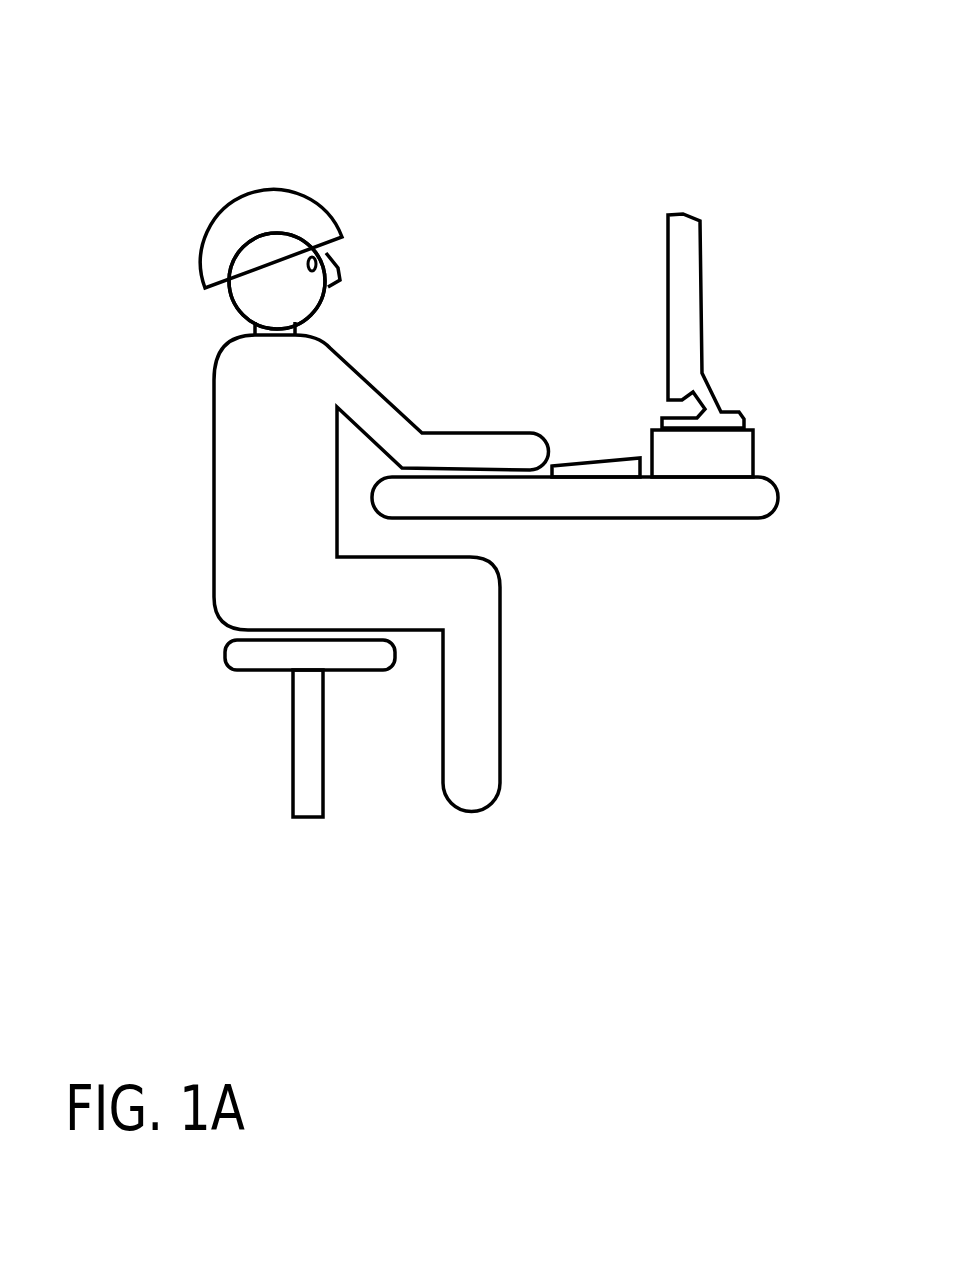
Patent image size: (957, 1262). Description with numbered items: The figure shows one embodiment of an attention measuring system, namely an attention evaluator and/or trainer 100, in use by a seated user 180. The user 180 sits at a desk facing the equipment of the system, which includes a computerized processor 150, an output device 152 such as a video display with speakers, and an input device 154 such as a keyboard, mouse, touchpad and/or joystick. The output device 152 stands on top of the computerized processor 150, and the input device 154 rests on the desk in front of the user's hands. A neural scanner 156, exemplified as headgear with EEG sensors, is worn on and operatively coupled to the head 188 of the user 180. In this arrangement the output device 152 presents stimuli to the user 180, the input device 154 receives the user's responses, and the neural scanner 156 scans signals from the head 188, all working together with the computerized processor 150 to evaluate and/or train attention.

The attention evaluator and/or trainer 100 is at (690, 136).
The computerized processor 150 is at (753, 455).
The output device 152 is at (703, 310).
The input device 154 is at (623, 462).
The neural scanner 156 is at (290, 190).
The user 180 is at (213, 493).
The head 188 is at (240, 310).